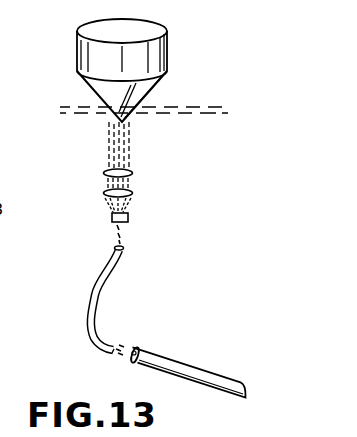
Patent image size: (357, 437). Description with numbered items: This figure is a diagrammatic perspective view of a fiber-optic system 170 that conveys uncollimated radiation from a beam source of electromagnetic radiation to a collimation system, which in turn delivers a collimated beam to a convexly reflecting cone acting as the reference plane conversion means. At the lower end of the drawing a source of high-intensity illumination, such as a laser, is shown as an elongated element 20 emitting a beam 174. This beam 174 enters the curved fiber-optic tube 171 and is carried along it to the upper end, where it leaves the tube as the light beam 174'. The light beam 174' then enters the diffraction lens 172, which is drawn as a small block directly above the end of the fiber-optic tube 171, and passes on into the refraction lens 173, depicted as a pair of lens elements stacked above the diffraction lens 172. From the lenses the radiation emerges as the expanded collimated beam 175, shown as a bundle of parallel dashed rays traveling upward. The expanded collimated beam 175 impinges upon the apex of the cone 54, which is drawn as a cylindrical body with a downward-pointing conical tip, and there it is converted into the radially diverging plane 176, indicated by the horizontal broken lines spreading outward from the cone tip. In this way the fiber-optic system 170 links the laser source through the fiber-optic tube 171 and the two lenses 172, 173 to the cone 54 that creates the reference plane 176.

The cone 54 is at (165, 45).
The radially diverging plane 176 is at (188, 107).
The expanded collimated beam 175 is at (133, 142).
The refraction lens 173 is at (133, 173).
The diffraction lens 172 is at (128, 218).
The light beam 174' is at (169, 237).
The fiber-optic system 170 is at (90, 209).
The fiber-optic tube 171 is at (124, 270).
The beam 174 is at (159, 330).
The detector tube 20 is at (187, 362).